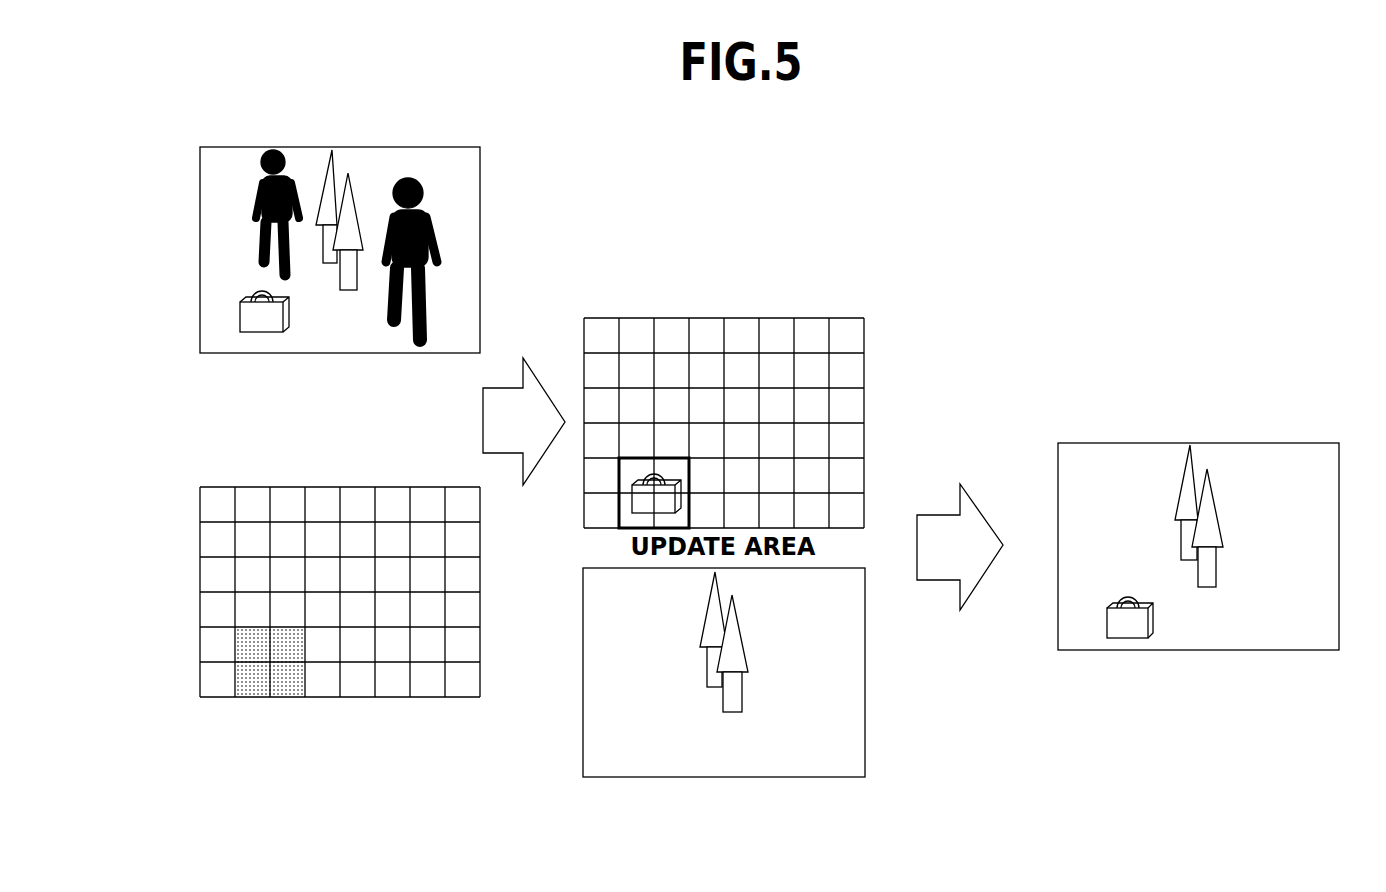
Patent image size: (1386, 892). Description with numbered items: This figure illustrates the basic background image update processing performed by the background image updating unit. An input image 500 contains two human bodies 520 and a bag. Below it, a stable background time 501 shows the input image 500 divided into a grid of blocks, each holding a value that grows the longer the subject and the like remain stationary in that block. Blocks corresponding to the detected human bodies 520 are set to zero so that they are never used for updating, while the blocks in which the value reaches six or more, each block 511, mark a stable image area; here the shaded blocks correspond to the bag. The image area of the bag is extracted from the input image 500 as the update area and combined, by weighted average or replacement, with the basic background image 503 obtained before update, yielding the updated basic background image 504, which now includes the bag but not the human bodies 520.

The input image 500 is at (483, 208).
The stable background time 501 is at (200, 487).
The basic background image 503 is at (868, 678).
The updated basic background image 504 is at (1253, 443).
The block 511 is at (230, 703).
The human bodies 520 is at (262, 178).